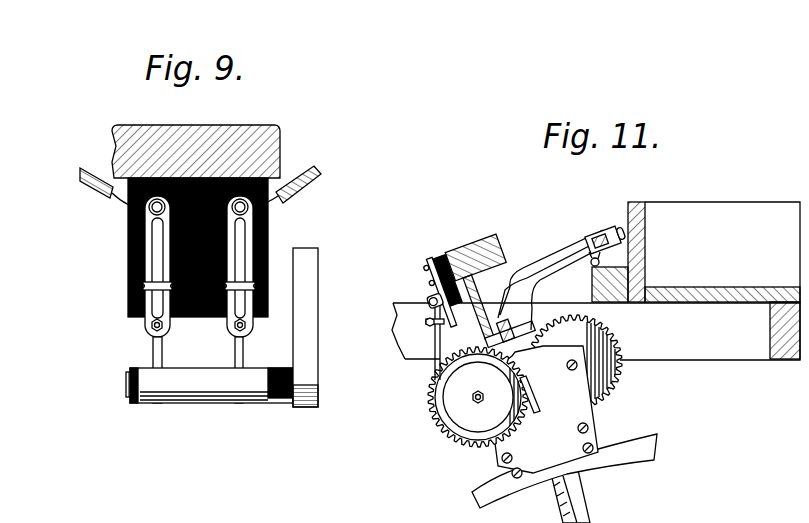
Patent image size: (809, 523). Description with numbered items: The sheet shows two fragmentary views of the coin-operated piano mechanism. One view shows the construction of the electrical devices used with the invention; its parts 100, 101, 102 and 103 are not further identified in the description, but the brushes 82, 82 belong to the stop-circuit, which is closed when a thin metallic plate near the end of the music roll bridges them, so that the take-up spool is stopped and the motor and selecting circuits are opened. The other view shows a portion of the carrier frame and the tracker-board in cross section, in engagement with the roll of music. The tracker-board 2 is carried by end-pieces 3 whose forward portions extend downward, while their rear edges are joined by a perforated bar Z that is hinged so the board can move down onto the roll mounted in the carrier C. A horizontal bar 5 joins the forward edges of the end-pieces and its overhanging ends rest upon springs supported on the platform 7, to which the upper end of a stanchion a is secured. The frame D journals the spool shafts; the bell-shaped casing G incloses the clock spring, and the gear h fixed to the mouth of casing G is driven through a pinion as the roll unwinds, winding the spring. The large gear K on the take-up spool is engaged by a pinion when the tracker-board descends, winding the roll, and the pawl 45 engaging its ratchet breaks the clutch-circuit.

In FIG. 9, the slotted link 101 is at (152, 343).
In FIG. 9, the pivot pin 102 is at (152, 226).
In FIG. 9, the spring arm 103 is at (320, 172).
In FIG. 9, the base bar 100 is at (215, 397).
In FIG. 9, the pawl 45 is at (310, 332).
In FIG. 11, the horizontal bar 5 is at (482, 237).
In FIG. 11, the tracker-board 2 is at (507, 287).
In FIG. 11, the end-pieces 3 is at (553, 251).
In FIG. 11, the perforated bar Z is at (601, 231).
In FIG. 11, the stanchion a is at (714, 252).
In FIG. 11, the platform 7 is at (737, 343).
In FIG. 11, the gear K is at (617, 389).
In FIG. 11, the bell-shaped casing G is at (503, 393).
In FIG. 11, the carrier C is at (650, 433).
In FIG. 11, the frame D is at (517, 453).
In FIG. 11, the gear h is at (452, 448).
In FIG. 11, the brushes 82 is at (438, 362).